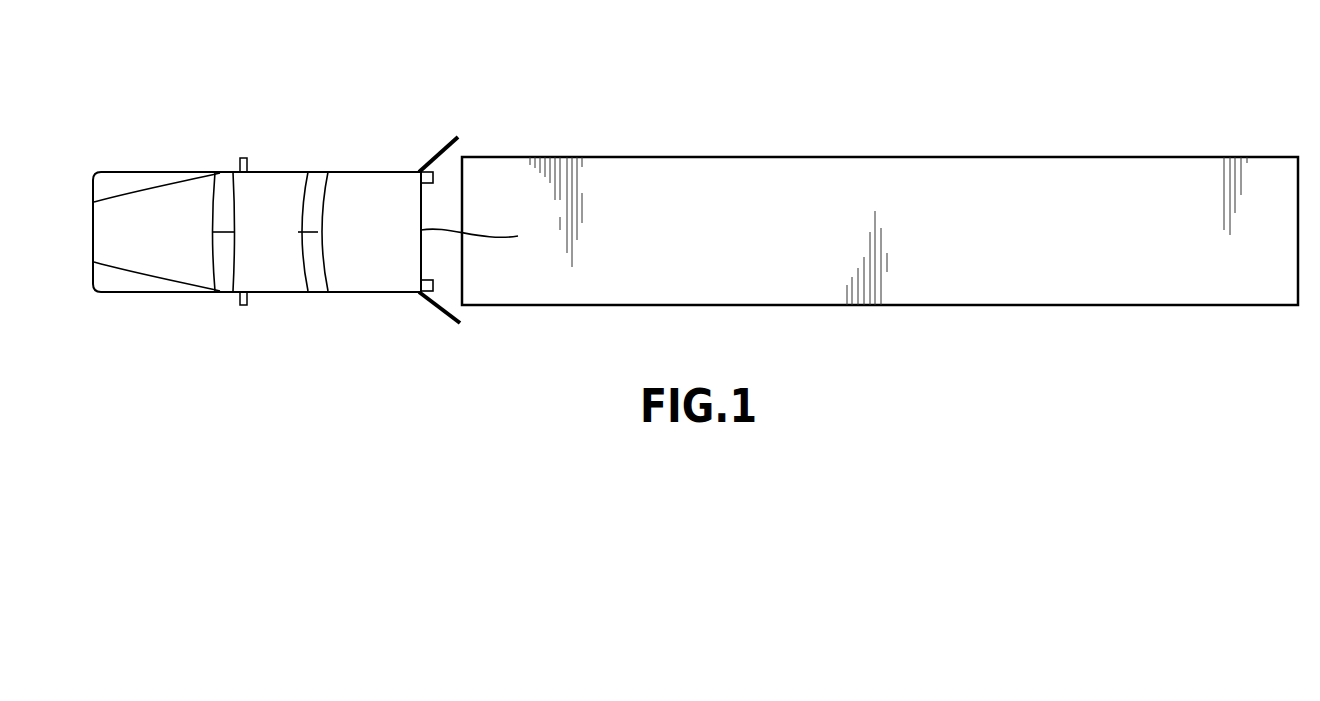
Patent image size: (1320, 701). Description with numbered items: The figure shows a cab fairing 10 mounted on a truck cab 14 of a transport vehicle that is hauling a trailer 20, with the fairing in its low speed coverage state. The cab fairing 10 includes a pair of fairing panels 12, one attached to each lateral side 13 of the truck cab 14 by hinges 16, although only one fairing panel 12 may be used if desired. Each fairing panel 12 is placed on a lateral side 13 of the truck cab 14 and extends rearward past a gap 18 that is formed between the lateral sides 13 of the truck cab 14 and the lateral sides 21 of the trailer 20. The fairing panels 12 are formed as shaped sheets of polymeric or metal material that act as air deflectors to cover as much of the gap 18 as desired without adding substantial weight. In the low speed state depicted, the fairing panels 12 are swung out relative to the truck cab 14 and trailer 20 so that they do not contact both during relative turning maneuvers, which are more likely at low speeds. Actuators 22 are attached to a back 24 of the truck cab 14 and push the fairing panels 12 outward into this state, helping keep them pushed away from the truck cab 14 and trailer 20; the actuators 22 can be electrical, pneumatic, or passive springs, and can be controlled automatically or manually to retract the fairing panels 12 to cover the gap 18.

The cab fairing 10 is at (410, 327).
The fairing panel 12 is at (435, 152).
The lateral side of the truck cab 13 is at (305, 172).
The truck cab 14 is at (265, 292).
The hinge 16 is at (420, 171).
The gap 18 is at (447, 167).
The trailer 20 is at (581, 305).
The lateral side of the trailer 21 is at (925, 157).
The actuator 22 is at (433, 177).
The back of the truck cab 24 is at (485, 236).